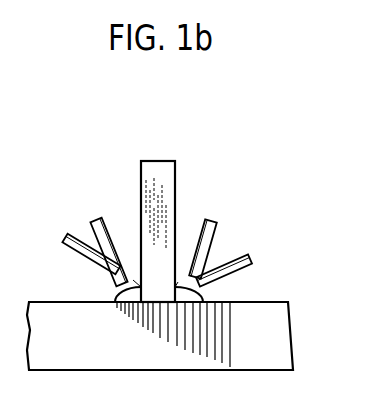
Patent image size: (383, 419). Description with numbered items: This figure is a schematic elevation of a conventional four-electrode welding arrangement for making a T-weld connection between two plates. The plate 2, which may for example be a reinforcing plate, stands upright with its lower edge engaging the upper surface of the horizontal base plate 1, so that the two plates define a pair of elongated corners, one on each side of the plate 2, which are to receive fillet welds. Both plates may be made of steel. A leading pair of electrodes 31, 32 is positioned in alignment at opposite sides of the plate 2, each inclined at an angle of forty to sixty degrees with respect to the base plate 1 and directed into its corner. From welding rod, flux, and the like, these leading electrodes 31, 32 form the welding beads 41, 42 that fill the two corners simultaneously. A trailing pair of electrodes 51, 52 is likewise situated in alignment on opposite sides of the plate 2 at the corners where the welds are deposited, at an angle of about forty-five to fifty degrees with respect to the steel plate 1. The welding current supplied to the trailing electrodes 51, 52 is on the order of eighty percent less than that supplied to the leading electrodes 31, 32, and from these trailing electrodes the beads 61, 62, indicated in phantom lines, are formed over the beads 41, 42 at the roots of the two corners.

The base plate 1 is at (275, 340).
The plate 2 is at (157, 168).
The leading electrode 31 is at (214, 222).
The leading electrode 32 is at (98, 218).
The welding bead 41 is at (203, 295).
The welding bead 42 is at (120, 296).
The trailing electrode 51 is at (252, 258).
The trailing electrode 52 is at (66, 235).
The bead 61 is at (178, 282).
The bead 62 is at (133, 280).